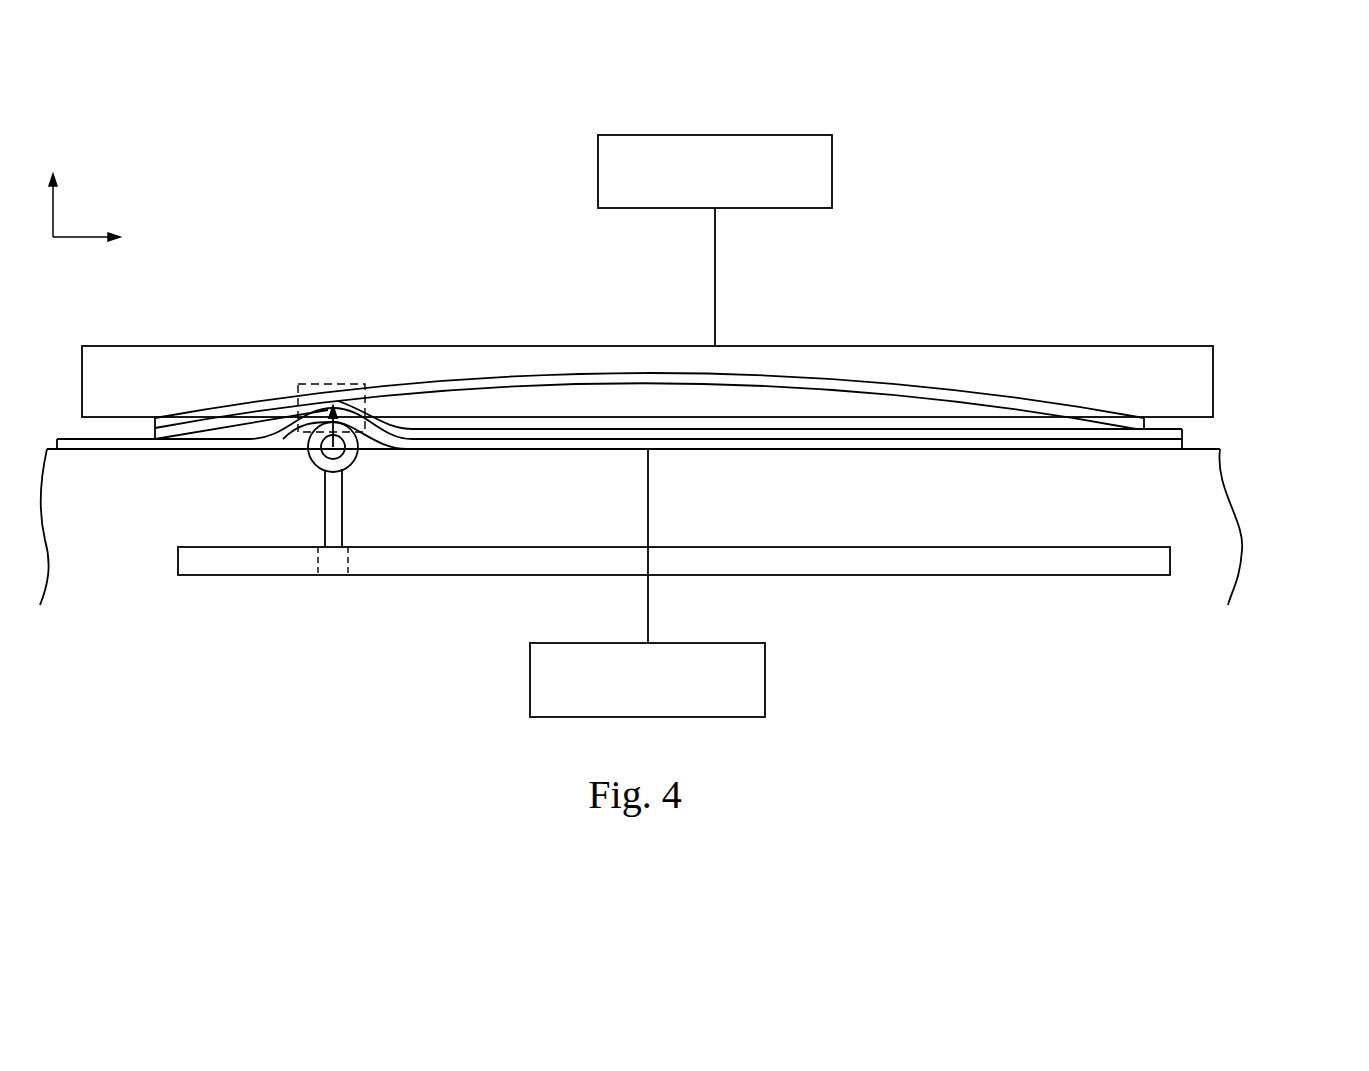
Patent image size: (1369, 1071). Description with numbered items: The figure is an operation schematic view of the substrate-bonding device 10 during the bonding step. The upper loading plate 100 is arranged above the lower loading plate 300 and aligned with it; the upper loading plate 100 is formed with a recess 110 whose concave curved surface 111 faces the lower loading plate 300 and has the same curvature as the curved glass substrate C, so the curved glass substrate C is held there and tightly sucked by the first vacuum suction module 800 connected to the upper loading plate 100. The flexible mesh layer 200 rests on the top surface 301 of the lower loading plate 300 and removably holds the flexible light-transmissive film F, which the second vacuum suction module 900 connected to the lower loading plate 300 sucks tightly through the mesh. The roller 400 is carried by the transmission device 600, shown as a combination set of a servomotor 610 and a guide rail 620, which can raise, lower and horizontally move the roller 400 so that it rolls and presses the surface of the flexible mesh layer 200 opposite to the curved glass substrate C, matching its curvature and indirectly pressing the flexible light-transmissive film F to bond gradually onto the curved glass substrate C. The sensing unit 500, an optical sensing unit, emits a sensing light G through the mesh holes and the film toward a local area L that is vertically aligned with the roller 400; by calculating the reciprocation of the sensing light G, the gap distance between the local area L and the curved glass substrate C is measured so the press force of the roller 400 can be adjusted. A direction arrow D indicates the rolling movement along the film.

The substrate-bonding device 10 is at (1167, 86).
The upper loading plate 100 is at (1202, 373).
The recess 110 is at (708, 447).
The concave curved surface 111 is at (1062, 407).
The flexible mesh layer 200 is at (694, 432).
The lower loading plate 300 is at (1222, 501).
The top surface 301 is at (1182, 447).
The roller 400 is at (343, 478).
The sensing unit 500 is at (353, 446).
The transmission device 600 is at (674, 625).
The servomotor 610 is at (338, 600).
The guide rail 620 is at (398, 575).
The first vacuum suction module 800 is at (833, 150).
The second vacuum suction module 900 is at (767, 658).
The local area L is at (314, 382).
The sensing light G is at (303, 437).
The curved glass substrate C is at (1120, 418).
The flexible light-transmissive film F is at (1168, 435).
The direction D is at (893, 456).